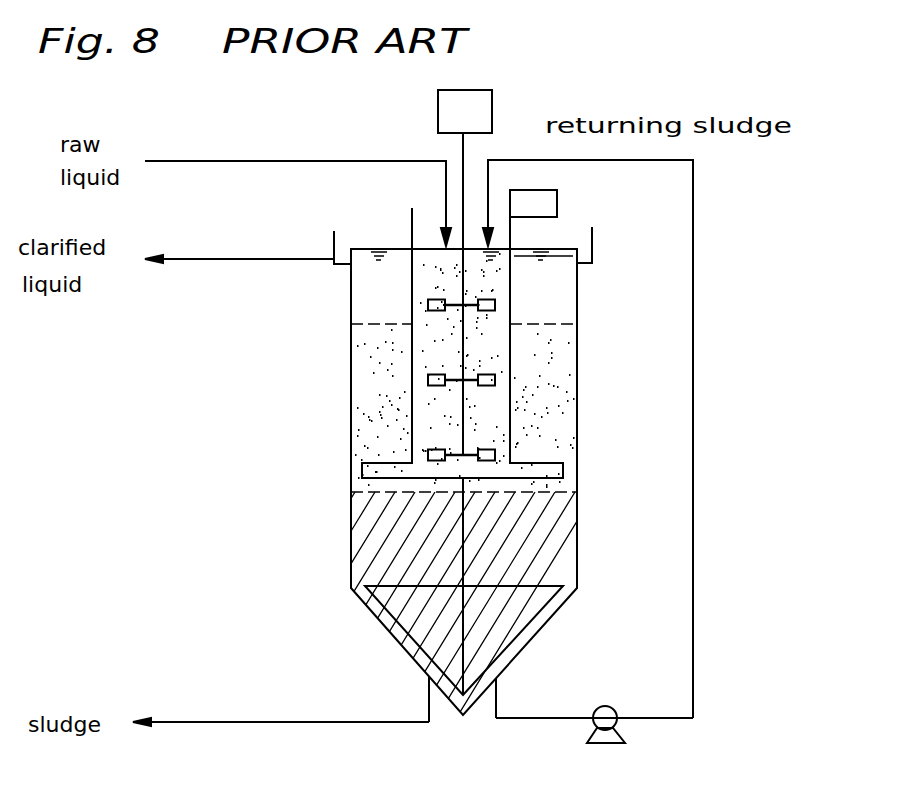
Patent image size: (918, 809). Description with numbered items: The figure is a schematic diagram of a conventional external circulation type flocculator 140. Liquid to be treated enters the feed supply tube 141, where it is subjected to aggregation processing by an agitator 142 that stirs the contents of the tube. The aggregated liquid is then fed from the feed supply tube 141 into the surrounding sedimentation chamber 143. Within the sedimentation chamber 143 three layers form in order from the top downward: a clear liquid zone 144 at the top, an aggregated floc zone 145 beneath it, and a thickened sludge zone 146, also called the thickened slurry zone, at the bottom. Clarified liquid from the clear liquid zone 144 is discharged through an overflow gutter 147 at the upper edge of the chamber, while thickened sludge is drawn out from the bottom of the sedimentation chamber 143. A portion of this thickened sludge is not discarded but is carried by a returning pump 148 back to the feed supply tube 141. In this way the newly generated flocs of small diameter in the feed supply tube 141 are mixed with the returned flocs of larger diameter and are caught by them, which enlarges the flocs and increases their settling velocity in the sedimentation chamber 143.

The external circulation type flocculator 140 is at (340, 301).
The feed supply tube 141 is at (410, 348).
The agitator 142 is at (487, 387).
The sedimentation chamber 143 is at (537, 629).
The clear liquid zone 144 is at (541, 293).
The aggregated floc zone 145 is at (551, 363).
The thickened sludge zone 146 is at (553, 542).
The overflow gutter 147 is at (336, 232).
The returning pump 148 is at (592, 726).